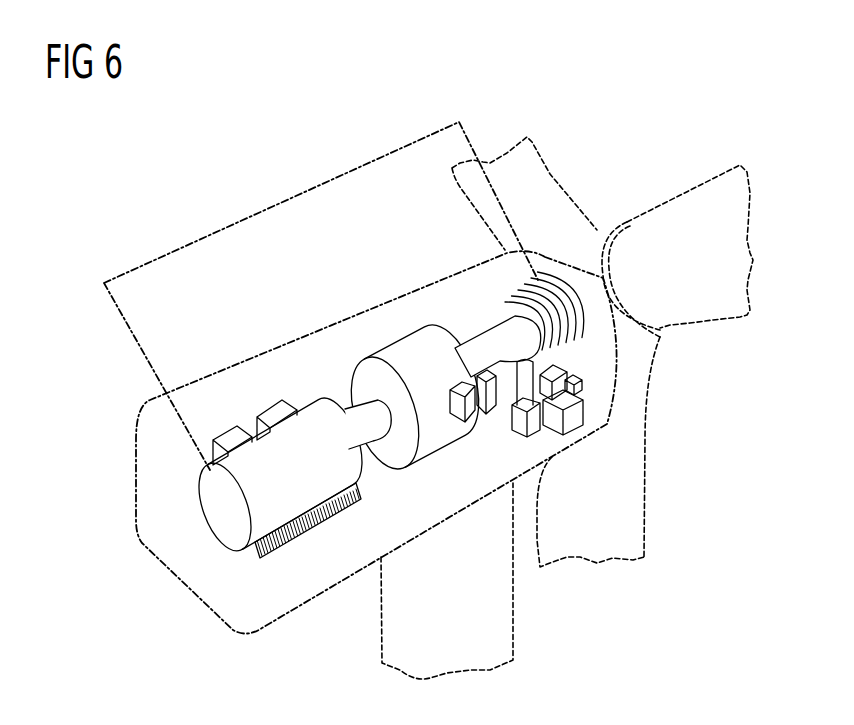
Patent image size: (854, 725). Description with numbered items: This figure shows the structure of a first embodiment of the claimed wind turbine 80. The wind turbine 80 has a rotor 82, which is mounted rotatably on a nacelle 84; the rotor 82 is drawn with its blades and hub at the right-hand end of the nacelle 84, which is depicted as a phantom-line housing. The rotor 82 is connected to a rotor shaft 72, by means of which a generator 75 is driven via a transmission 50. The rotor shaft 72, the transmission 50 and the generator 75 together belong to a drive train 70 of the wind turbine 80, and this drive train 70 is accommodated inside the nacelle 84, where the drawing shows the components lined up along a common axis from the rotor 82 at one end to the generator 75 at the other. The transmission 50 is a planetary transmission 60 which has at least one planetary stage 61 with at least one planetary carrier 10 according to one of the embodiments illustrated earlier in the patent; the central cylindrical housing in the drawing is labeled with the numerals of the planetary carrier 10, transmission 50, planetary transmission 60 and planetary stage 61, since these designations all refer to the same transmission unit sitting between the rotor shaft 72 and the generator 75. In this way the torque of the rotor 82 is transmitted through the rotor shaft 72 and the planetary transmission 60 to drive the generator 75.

The planetary carrier 10 is at (368, 354).
The transmission 50 is at (368, 354).
The planetary transmission 60 is at (368, 354).
The planetary stage 61 is at (398, 350).
The drive train 70 is at (289, 200).
The rotor shaft 72 is at (490, 340).
The generator 75 is at (223, 525).
The wind turbine 80 is at (168, 199).
The rotor 82 is at (640, 502).
The nacelle 84 is at (257, 357).